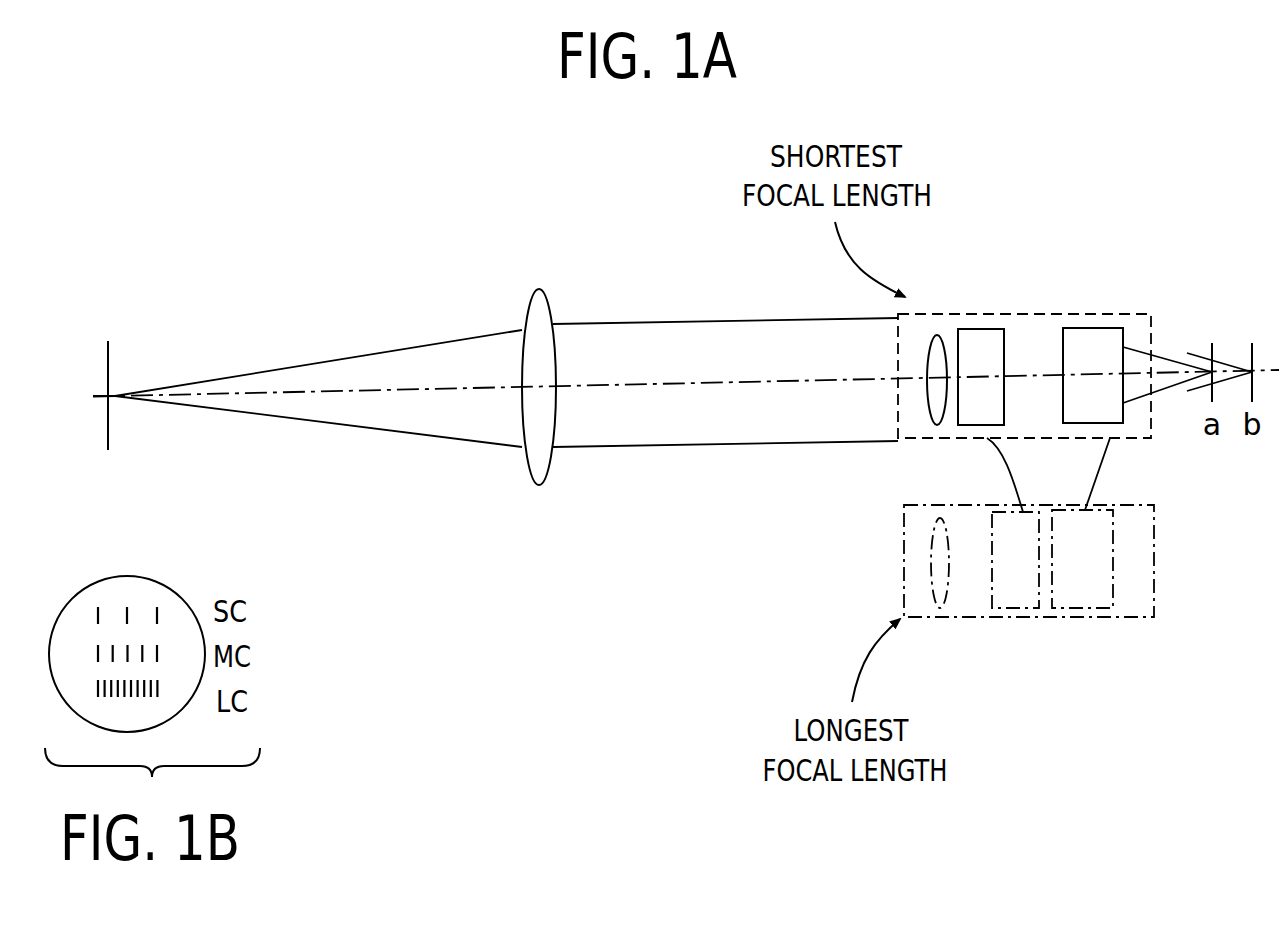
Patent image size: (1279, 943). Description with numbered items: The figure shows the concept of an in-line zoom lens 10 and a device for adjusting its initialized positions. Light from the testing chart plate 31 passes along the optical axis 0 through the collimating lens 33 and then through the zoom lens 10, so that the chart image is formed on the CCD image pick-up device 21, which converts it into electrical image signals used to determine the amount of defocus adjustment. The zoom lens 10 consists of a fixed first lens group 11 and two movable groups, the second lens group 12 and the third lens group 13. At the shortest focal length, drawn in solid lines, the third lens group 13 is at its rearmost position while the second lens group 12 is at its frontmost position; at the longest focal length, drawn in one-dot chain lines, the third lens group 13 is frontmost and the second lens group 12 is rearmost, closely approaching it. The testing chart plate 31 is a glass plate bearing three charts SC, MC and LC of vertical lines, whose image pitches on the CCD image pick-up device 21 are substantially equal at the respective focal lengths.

In FIG. 1A, the testing chart plate 31 is at (108, 361).
In FIG. 1B, the testing chart plate 31 is at (151, 591).
In FIG. 1A, the collimating lens 33 is at (537, 312).
In FIG. 1A, the optical axis 0 is at (727, 383).
In FIG. 1A, the zoom lens 10 is at (1020, 312).
In FIG. 1A, the first lens group 11 is at (935, 340).
In FIG. 1A, the second lens group 12 is at (975, 345).
In FIG. 1A, the third lens group 13 is at (1092, 345).
In FIG. 1A, the CCD image pick-up device 21 is at (1208, 353).